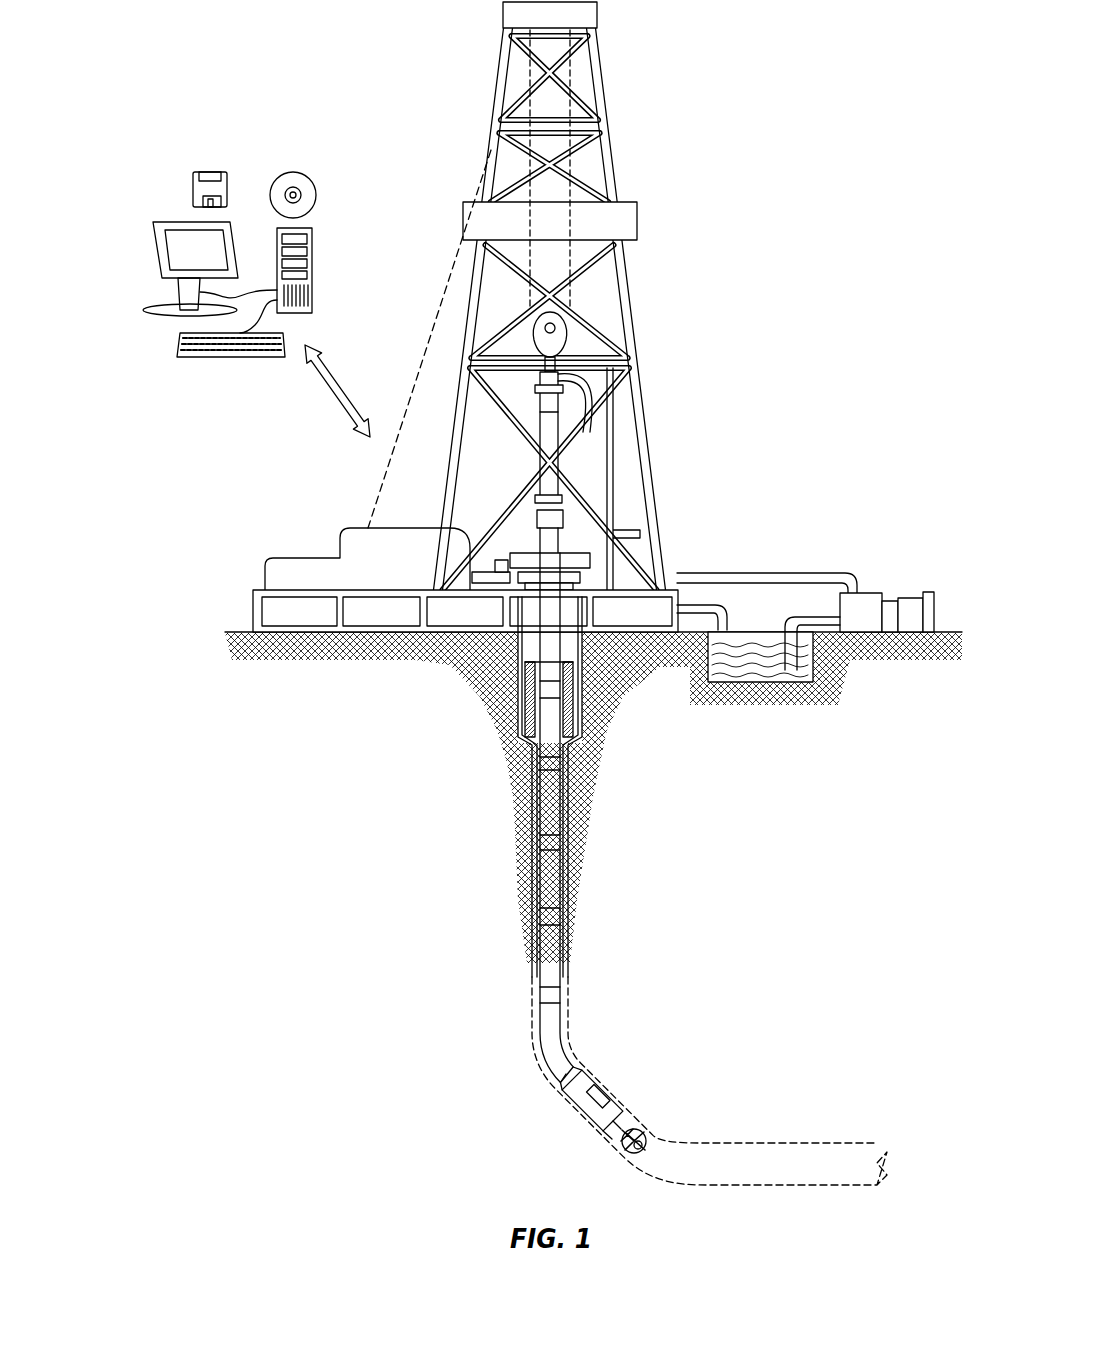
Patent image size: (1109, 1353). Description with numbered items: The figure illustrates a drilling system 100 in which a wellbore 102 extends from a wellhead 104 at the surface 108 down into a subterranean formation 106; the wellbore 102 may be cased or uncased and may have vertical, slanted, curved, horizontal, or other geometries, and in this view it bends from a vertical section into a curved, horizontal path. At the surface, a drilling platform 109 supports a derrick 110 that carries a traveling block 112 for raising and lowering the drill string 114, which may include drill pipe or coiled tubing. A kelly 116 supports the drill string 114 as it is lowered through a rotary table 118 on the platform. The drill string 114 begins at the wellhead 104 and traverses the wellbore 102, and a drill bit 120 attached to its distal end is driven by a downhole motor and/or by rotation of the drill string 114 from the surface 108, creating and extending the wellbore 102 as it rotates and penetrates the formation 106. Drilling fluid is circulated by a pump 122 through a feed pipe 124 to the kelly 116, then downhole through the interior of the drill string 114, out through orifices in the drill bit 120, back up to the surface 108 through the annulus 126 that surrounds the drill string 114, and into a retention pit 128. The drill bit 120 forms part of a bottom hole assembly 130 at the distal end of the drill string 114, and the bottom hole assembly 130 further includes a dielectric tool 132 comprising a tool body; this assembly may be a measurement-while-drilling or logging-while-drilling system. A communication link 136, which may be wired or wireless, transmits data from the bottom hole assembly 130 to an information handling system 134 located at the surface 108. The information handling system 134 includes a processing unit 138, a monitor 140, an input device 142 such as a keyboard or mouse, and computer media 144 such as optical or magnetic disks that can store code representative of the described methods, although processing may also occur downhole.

The drilling system 100 is at (868, 96).
The wellbore 102 is at (563, 836).
The wellhead 104 is at (598, 578).
The subterranean formation 106 is at (795, 928).
The surface 108 is at (948, 632).
The drilling platform 109 is at (253, 612).
The derrick 110 is at (611, 143).
The traveling block 112 is at (578, 332).
The drill string 114 is at (560, 822).
The kelly 116 is at (552, 415).
The rotary table 118 is at (597, 532).
The drill bit 120 is at (648, 1130).
The pump 122 is at (865, 593).
The feed pipe 124 is at (787, 572).
The annulus 126 is at (537, 836).
The retention pit 128 is at (755, 668).
The bottom hole assembly 130 is at (558, 1098).
The dielectric tool 132 is at (593, 1103).
The information handling system 134 is at (157, 160).
The communication link 136 is at (328, 395).
The processing unit 138 is at (312, 240).
The monitor 140 is at (157, 260).
The input device 142 is at (188, 358).
The computer media 144 is at (290, 172).